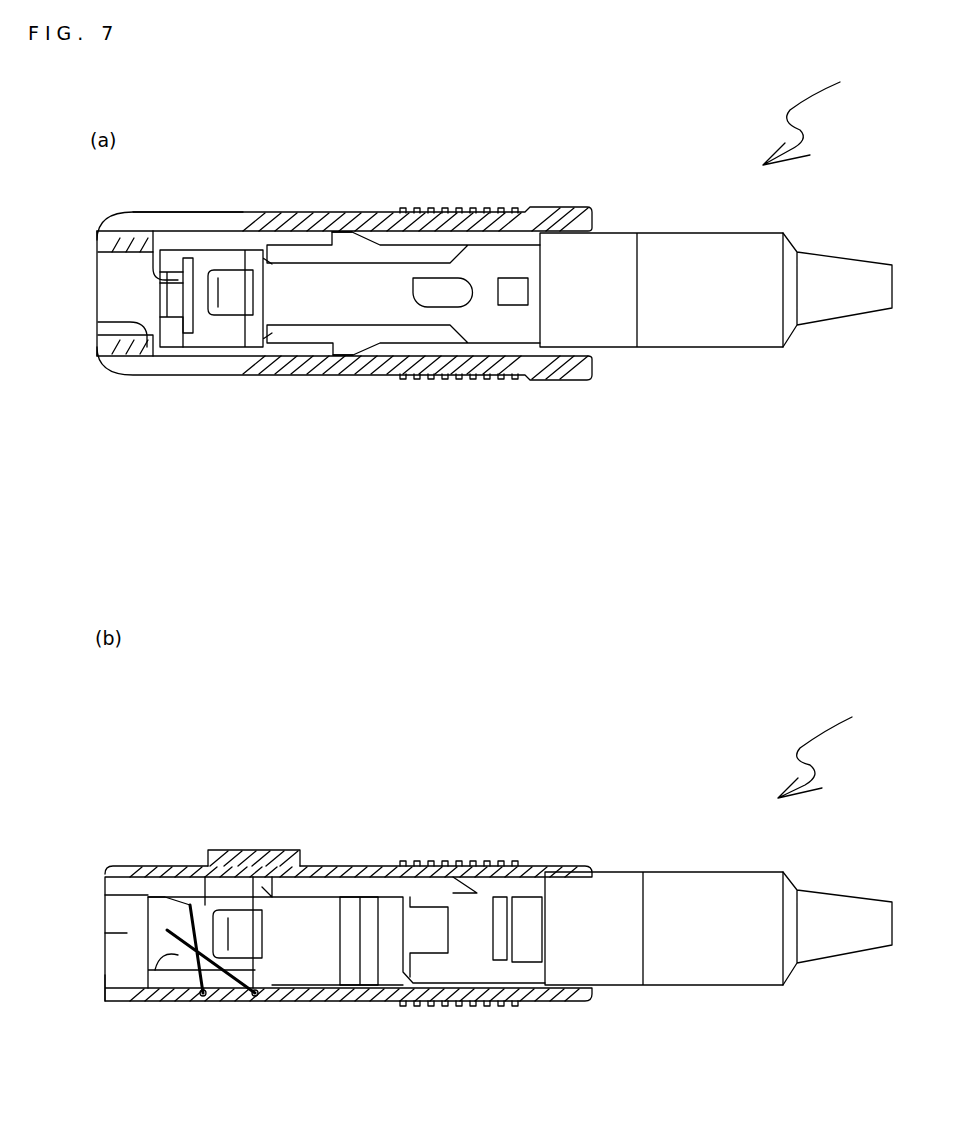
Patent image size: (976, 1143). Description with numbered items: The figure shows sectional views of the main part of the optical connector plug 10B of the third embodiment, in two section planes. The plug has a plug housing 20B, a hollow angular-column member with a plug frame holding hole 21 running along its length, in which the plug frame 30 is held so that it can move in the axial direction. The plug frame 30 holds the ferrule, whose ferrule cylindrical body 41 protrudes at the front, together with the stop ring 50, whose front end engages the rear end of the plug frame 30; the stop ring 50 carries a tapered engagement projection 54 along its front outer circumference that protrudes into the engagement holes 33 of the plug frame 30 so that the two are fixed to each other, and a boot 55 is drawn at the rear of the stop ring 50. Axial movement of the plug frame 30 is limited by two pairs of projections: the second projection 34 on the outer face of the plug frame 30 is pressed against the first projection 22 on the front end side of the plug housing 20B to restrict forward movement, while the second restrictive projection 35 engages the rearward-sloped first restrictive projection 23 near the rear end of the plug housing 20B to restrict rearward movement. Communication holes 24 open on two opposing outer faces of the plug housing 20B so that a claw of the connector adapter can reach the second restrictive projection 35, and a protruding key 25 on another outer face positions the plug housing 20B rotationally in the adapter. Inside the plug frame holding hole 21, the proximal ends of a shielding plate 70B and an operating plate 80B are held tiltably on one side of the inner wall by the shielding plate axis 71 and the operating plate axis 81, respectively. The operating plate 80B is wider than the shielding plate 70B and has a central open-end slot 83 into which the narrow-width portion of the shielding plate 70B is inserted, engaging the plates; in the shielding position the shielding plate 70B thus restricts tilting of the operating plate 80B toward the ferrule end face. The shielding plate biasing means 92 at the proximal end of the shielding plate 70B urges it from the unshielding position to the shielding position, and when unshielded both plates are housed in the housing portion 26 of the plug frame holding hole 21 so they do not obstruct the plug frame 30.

The optical connector plug 10B is at (828, 429).
The plug housing 20B is at (258, 231).
The plug frame holding hole 21 is at (217, 211).
The first projection 22 is at (108, 368).
The first restrictive projection 23 is at (442, 227).
The communication holes 24 is at (240, 217).
The protruding key 25 is at (268, 850).
The housing portion 26 is at (98, 322).
The plug frame 30 is at (352, 268).
The engagement holes 33 is at (500, 962).
The second projection 34 is at (313, 232).
The second restrictive projection 35 is at (417, 227).
The ferrule cylindrical body 41 is at (230, 297).
The stop ring 50 is at (607, 333).
The engagement projection 54 is at (493, 895).
The boot 55 is at (710, 333).
The shielding plate 70B is at (183, 313).
The shielding plate axis 71 is at (202, 997).
The operating plate 80B is at (213, 325).
The operating plate axis 81 is at (254, 997).
The slot 83 is at (160, 260).
The shielding plate biasing means 92 is at (177, 1000).